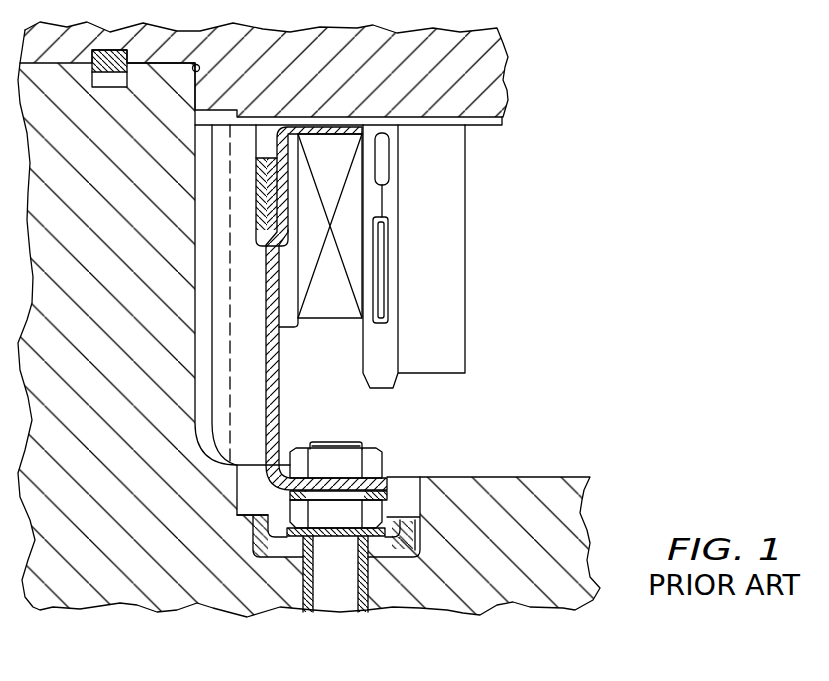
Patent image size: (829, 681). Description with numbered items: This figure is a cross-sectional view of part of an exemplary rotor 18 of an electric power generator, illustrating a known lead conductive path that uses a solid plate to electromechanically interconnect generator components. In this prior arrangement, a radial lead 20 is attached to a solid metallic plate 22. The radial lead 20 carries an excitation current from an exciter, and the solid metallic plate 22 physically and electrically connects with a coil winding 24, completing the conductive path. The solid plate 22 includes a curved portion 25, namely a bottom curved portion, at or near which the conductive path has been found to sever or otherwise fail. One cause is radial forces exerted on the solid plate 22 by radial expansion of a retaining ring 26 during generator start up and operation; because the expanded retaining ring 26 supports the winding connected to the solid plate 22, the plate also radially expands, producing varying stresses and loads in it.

The rotor 18 is at (346, 344).
The radial lead 20 is at (333, 588).
The solid metallic plate 22 is at (280, 376).
The coil winding 24 is at (343, 218).
The curved portion 25 is at (268, 490).
The retaining ring 26 is at (503, 82).